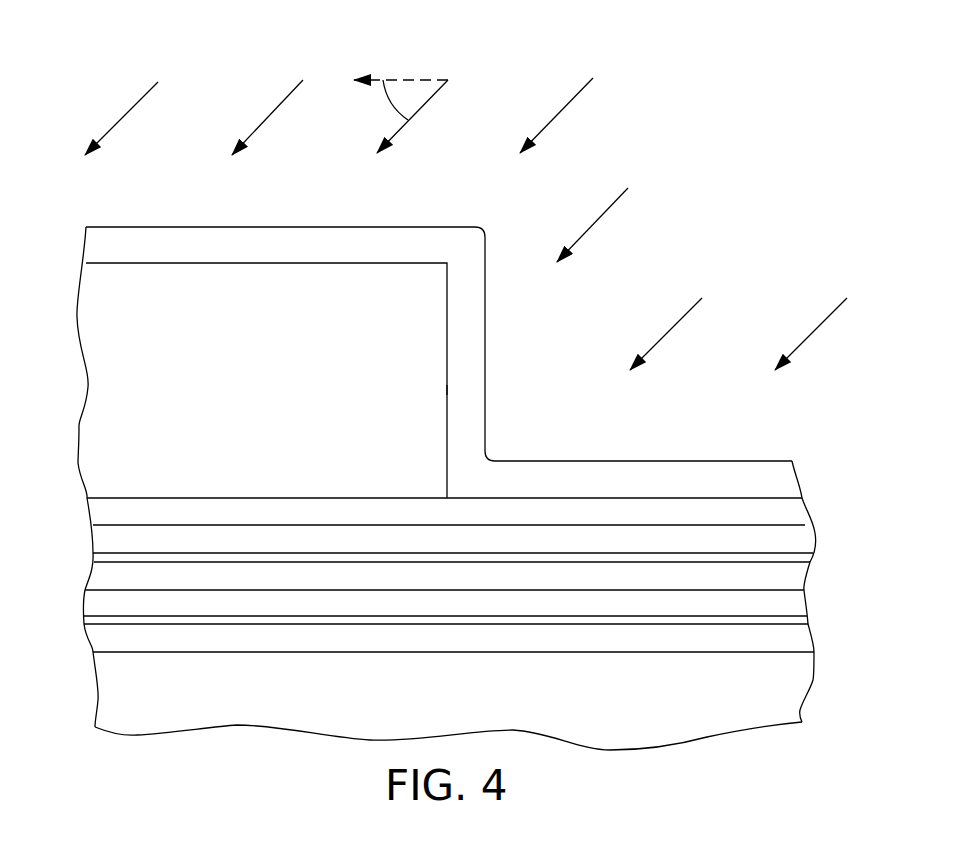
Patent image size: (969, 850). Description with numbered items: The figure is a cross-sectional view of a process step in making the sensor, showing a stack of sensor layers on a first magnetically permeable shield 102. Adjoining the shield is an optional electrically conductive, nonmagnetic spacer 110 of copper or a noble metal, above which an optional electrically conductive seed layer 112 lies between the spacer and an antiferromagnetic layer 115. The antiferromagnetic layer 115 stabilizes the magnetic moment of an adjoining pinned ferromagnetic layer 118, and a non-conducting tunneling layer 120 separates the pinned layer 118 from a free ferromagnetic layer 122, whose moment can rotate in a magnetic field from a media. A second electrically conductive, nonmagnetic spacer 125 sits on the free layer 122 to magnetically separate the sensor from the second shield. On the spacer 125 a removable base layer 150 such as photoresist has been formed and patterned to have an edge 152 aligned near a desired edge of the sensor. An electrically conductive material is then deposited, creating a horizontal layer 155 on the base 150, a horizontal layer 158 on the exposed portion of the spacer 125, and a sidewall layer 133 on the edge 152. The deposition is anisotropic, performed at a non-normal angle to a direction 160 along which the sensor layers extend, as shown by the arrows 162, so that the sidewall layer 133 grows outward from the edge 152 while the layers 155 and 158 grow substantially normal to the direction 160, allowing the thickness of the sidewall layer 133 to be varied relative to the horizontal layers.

The first magnetically permeable shield 102 is at (276, 704).
The electrically conductive, nonmagnetic spacer 110 is at (690, 642).
The electrically conductive seed layer 112 is at (163, 623).
The antiferromagnetic layer 115 is at (408, 603).
The pinned ferromagnetic layer 118 is at (525, 580).
The tunneling layer 120 is at (328, 557).
The free ferromagnetic layer 122 is at (617, 542).
The second electrically conductive, nonmagnetic spacer 125 is at (762, 515).
The sidewall layer 133 is at (475, 337).
The removable base layer 150 is at (288, 397).
The edge 152 is at (446, 390).
The horizontal layer 155 is at (160, 237).
The horizontal layer 158 is at (703, 470).
The direction 160 is at (417, 72).
The arrows 162 is at (557, 117).